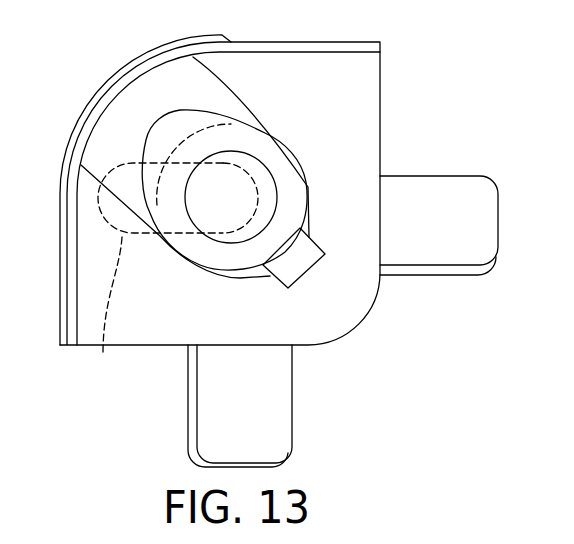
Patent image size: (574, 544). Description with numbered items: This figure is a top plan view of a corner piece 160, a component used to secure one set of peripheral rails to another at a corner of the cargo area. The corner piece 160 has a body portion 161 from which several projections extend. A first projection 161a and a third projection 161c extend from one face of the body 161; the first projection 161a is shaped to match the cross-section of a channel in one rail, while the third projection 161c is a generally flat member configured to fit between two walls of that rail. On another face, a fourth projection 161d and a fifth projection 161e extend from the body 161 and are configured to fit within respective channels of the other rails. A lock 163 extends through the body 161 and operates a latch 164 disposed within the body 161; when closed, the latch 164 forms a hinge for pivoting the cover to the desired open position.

The corner piece 160 is at (297, 258).
The body portion 161 is at (150, 318).
The first projection 161a is at (270, 443).
The third projection 161c is at (188, 438).
The fourth projection 161d is at (455, 213).
The fifth projection 161e is at (467, 277).
The lock 163 is at (277, 196).
The latch 164 is at (170, 273).